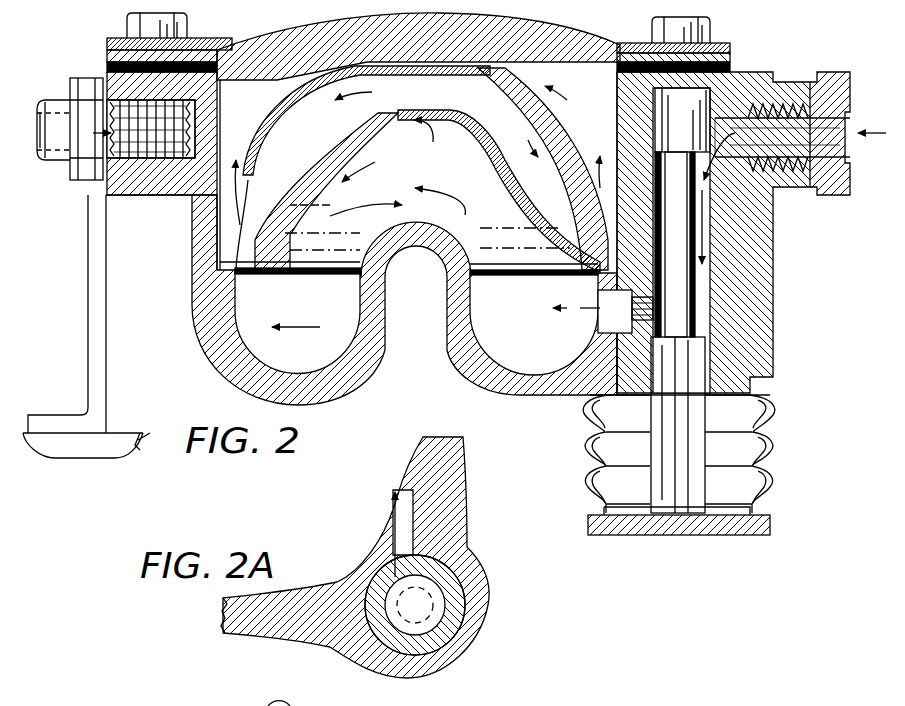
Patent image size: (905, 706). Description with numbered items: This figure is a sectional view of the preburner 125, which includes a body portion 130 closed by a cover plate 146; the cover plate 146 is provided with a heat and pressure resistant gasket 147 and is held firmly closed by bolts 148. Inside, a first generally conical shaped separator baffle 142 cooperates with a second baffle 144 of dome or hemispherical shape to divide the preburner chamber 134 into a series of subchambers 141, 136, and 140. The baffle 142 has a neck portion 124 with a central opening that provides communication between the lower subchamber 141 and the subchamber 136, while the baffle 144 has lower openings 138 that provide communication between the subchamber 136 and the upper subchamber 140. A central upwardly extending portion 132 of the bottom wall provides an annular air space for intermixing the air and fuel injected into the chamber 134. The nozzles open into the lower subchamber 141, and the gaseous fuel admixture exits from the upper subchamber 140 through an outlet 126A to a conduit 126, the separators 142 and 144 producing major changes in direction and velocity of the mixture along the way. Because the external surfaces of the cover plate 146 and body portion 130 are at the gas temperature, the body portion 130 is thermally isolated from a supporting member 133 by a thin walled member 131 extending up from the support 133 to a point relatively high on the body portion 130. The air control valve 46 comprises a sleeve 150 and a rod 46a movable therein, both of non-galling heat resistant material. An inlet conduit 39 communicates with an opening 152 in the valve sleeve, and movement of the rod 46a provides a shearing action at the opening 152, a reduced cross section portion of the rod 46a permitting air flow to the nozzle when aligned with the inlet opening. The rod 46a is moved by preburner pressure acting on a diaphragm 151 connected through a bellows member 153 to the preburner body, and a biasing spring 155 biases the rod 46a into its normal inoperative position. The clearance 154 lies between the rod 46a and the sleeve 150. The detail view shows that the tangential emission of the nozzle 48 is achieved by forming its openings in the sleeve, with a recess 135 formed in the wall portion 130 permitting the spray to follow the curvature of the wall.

In FIG. 2, the preburner 125 is at (571, 30).
In FIG. 2, the cover plate 146 is at (268, 36).
In FIG. 2, the gasket 147 is at (733, 68).
In FIG. 2, the bolts 148 is at (712, 33).
In FIG. 2, the conduit 126 is at (66, 165).
In FIG. 2, the outlet 126A is at (266, 92).
In FIG. 2, the upper subchamber 140 is at (259, 144).
In FIG. 2, the subchamber 136 is at (345, 147).
In FIG. 2, the neck portion 124 is at (382, 147).
In FIG. 2, the lower openings 138 is at (250, 205).
In FIG. 2, the second baffle 144 is at (570, 165).
In FIG. 2, the separator baffle 142 is at (543, 204).
In FIG. 2, the lower subchamber 141 is at (350, 242).
In FIG. 2, the body portion 130 is at (192, 222).
In FIG. 2A, the body portion 130 is at (458, 548).
In FIG. 2, the thin walled member 131 is at (100, 347).
In FIG. 2, the supporting member 133 is at (122, 440).
In FIG. 2, the central upwardly extending portion 132 is at (452, 296).
In FIG. 2, the preburner chamber 134 is at (338, 336).
In FIG. 2, the recess 135 is at (600, 300).
In FIG. 2A, the recess 135 is at (388, 540).
In FIG. 2, the nozzle 48 is at (624, 314).
In FIG. 2A, the nozzle 48 is at (378, 558).
In FIG. 2, the sleeve 150 is at (718, 214).
In FIG. 2A, the sleeve 150 is at (409, 647).
In FIG. 2, the valve sleeve inlet opening 152 is at (708, 136).
In FIG. 2, the inlet conduit 39 is at (822, 186).
In FIG. 2, the annular clearance 154 is at (706, 297).
In FIG. 2, the air control valve 46 is at (715, 357).
In FIG. 2A, the air control valve 46 is at (452, 588).
In FIG. 2, the rod 46a is at (684, 500).
In FIG. 2, the bellows member 153 is at (770, 480).
In FIG. 2, the biasing spring 155 is at (603, 489).
In FIG. 2, the diaphragm 151 is at (772, 527).